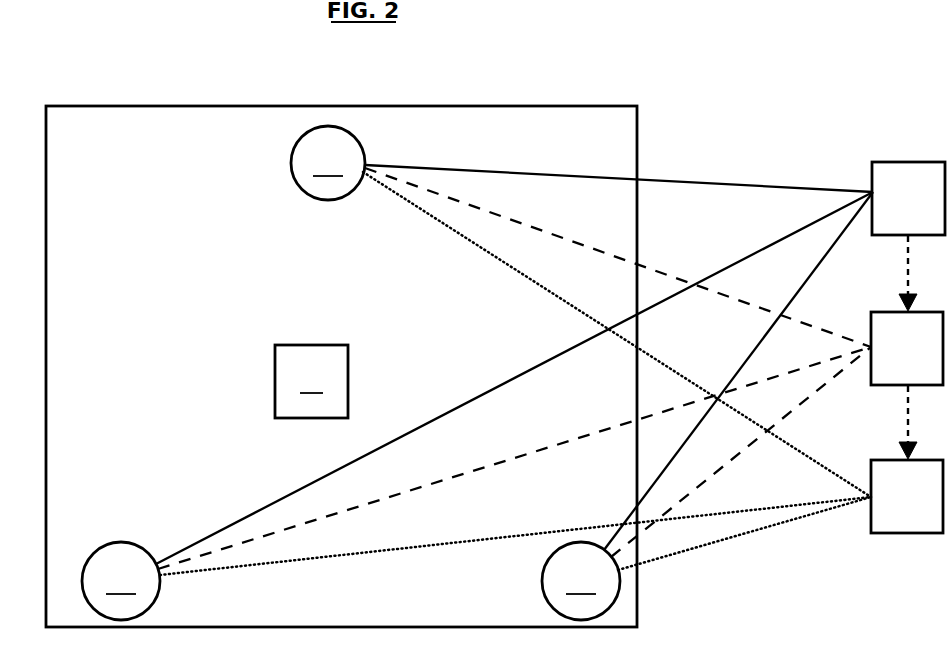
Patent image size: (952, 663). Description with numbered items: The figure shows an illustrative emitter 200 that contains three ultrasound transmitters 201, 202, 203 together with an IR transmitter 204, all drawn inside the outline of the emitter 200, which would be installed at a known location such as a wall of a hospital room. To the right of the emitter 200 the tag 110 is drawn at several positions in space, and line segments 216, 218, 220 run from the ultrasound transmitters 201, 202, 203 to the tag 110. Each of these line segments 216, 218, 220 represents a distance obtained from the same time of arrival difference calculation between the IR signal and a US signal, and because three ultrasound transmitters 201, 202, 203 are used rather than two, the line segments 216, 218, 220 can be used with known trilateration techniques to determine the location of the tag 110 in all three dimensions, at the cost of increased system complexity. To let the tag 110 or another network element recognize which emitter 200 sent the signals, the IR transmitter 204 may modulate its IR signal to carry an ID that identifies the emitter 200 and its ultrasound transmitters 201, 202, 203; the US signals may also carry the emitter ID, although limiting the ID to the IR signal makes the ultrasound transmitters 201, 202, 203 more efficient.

The emitter 200 is at (170, 250).
The tag 110 is at (925, 210).
The ultrasound transmitter 201 is at (291, 160).
The ultrasound transmitter 202 is at (542, 590).
The ultrasound transmitter 203 is at (116, 542).
The IR transmitter 204 is at (275, 363).
The line segment 216 is at (718, 182).
The line segment 218 is at (780, 238).
The line segment 220 is at (813, 279).